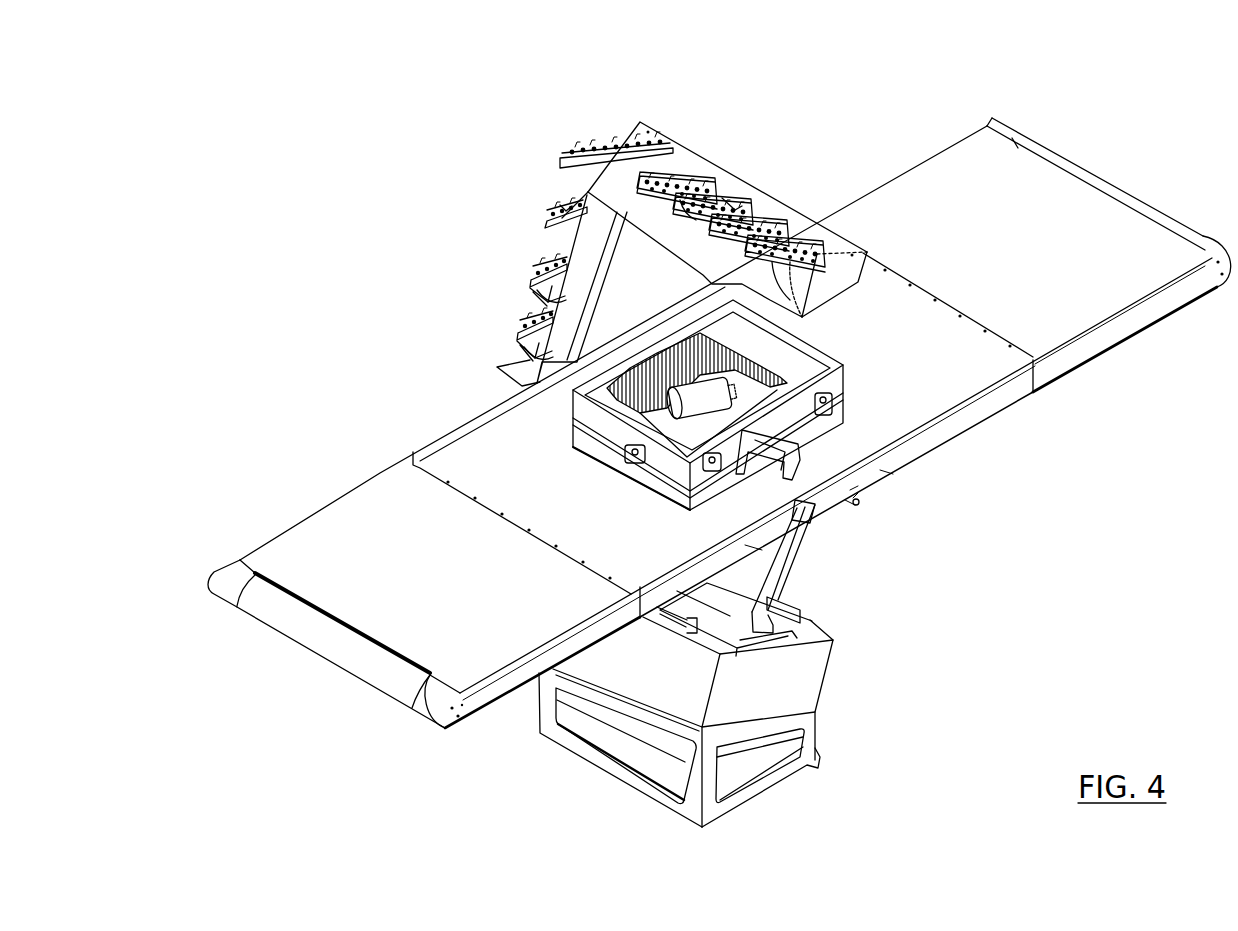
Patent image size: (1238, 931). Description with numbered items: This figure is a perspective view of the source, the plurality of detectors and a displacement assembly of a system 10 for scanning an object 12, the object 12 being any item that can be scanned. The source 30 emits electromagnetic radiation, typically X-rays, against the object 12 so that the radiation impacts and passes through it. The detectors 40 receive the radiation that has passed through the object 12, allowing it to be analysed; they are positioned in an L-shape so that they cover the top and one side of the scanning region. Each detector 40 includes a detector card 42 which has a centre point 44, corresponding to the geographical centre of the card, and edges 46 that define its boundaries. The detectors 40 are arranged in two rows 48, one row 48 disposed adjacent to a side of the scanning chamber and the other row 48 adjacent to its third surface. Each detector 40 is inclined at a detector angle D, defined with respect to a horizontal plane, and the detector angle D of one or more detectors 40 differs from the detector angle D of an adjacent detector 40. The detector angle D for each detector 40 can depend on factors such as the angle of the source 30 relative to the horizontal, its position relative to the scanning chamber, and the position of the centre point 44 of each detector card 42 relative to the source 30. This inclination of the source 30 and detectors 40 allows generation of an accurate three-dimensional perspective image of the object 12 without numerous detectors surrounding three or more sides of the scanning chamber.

The system 10 is at (899, 74).
The object 12 is at (840, 410).
The source 30 is at (866, 695).
The detectors 40 is at (574, 155).
The detector card 42 is at (560, 207).
The centre point 44 is at (560, 265).
The edges 46 is at (545, 282).
The rows 48 is at (552, 245).
The detector angle D is at (556, 293).